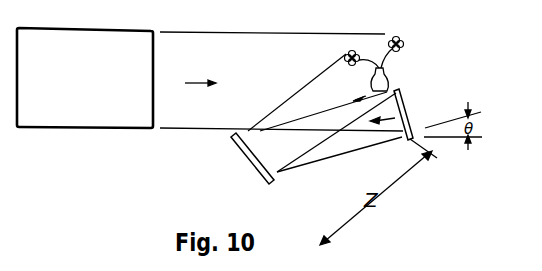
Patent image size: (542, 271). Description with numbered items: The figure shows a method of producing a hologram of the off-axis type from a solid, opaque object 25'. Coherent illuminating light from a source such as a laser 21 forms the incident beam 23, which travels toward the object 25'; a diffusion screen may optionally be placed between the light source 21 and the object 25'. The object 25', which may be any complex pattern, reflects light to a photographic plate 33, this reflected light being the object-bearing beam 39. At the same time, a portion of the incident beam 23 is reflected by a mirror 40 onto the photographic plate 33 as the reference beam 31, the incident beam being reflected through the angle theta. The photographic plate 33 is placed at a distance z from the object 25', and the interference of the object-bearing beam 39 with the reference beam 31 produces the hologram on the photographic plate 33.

The laser 21 is at (128, 28).
The incident beam 23 is at (255, 32).
The opaque object 25' is at (392, 64).
The reference beam 31 is at (367, 145).
The photographic plate 33 is at (245, 158).
The object-bearing beam 39 is at (247, 128).
The mirror 40 is at (408, 121).